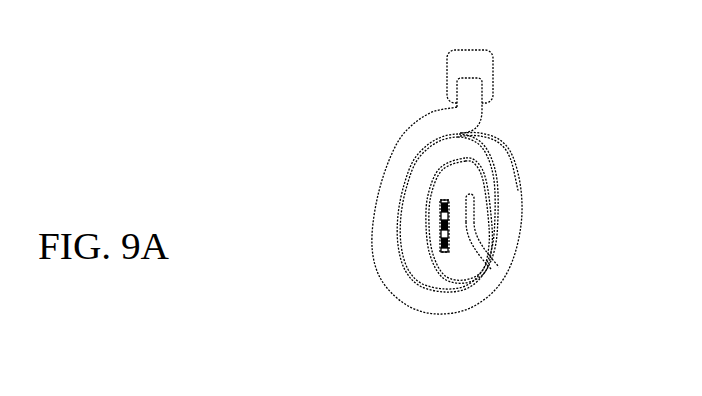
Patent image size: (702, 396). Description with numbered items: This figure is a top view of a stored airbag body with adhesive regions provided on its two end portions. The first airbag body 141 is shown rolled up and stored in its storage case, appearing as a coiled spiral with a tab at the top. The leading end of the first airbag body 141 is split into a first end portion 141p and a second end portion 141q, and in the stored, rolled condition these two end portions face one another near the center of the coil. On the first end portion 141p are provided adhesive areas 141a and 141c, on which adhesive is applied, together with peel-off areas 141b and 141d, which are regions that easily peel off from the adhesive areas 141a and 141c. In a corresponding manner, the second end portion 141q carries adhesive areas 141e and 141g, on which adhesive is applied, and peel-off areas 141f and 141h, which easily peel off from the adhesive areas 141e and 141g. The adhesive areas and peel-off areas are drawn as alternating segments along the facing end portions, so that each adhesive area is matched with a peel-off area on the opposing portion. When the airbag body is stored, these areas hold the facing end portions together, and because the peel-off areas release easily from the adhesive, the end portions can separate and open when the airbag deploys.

The first airbag body 141 is at (410, 145).
The adhesive area 141a is at (449, 251).
The peel-off area 141b is at (449, 240).
The adhesive area 141c is at (449, 228).
The peel-off area 141d is at (449, 216).
The adhesive area 141e is at (440, 211).
The peel-off area 141f is at (440, 223).
The adhesive area 141g is at (440, 235).
The peel-off area 141h is at (440, 247).
The first end portion 141p is at (474, 207).
The second end portion 141q is at (440, 201).